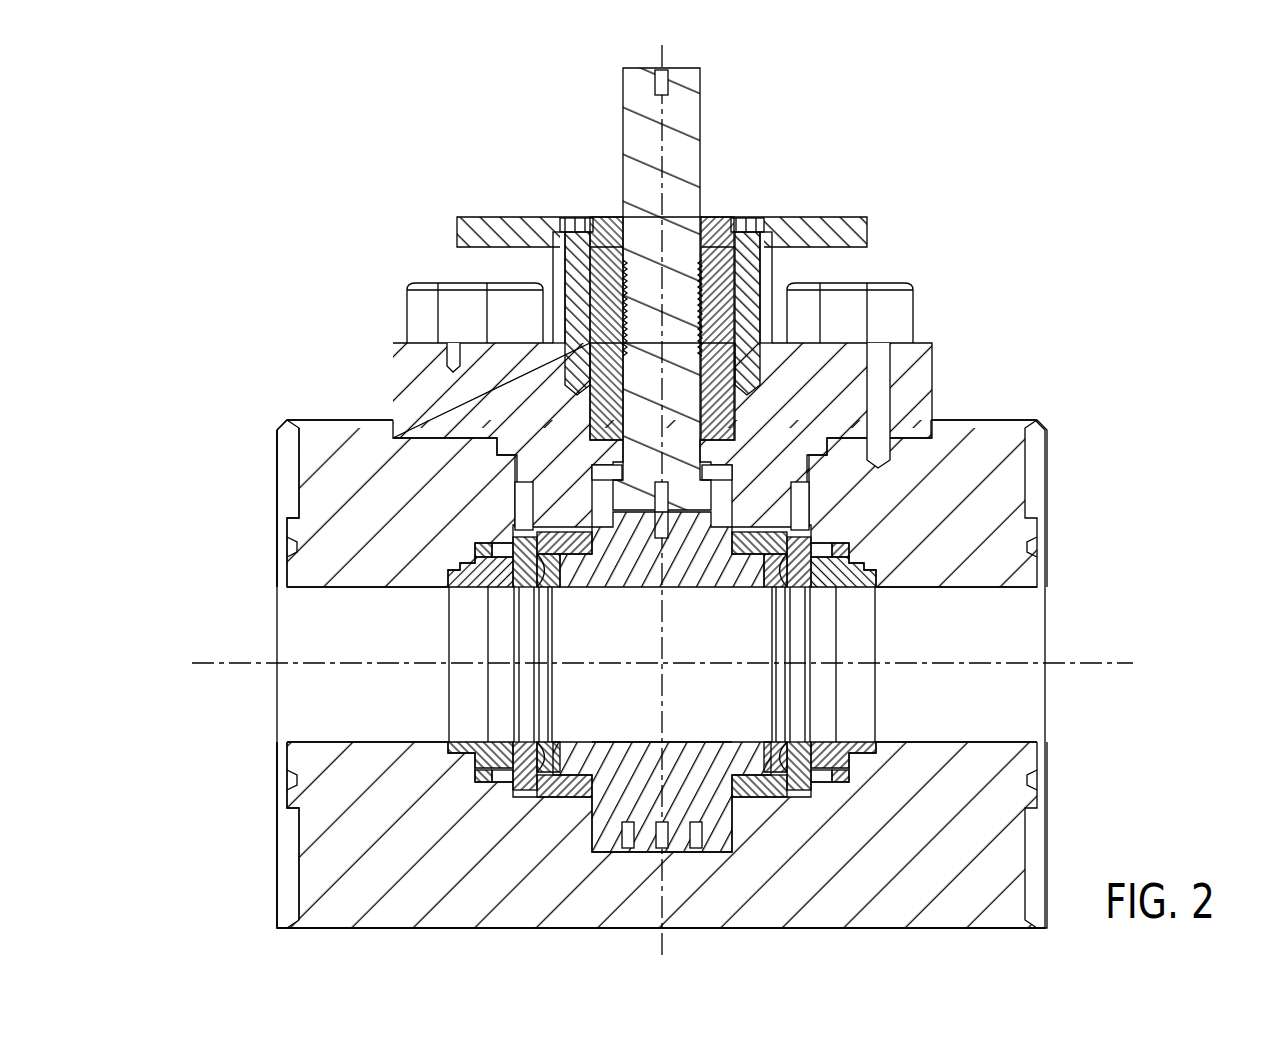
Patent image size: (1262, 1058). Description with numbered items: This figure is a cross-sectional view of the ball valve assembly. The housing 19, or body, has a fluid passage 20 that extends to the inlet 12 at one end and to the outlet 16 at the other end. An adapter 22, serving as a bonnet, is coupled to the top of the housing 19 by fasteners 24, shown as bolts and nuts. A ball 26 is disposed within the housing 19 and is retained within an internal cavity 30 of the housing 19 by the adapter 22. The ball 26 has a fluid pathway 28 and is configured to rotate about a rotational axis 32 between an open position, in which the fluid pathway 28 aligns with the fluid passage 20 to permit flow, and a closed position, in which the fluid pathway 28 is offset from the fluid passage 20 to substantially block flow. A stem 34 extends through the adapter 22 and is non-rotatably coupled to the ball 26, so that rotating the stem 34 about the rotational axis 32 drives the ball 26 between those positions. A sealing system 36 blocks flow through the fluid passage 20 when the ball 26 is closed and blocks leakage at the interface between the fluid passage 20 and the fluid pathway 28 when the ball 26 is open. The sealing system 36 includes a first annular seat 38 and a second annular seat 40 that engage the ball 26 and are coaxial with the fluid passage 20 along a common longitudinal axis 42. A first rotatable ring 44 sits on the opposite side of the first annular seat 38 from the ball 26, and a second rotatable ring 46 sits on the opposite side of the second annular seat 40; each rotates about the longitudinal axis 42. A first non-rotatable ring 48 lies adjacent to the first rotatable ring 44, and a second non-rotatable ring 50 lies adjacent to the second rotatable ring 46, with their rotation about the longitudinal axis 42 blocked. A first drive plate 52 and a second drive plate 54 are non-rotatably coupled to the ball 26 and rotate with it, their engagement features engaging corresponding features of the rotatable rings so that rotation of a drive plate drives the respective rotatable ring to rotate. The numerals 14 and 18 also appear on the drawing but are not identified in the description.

The inlet 12 is at (1045, 598).
The ball valve 14 is at (1064, 600).
The outlet 16 is at (287, 588).
The flow inlet direction 18 is at (214, 634).
The housing 19 is at (998, 491).
The fluid passage 20 is at (1005, 736).
The adapter 22 is at (912, 384).
The fasteners 24 is at (417, 300).
The ball 26 is at (628, 760).
The fluid pathway 28 is at (690, 742).
The internal cavity 30 is at (547, 773).
The rotational axis 32 is at (660, 55).
The stem 34 is at (677, 137).
The sealing system 36 is at (430, 706).
The first annular seat 38 is at (773, 577).
The second annular seat 40 is at (548, 578).
The longitudinal axis 42 is at (1107, 663).
The first rotatable ring 44 is at (815, 582).
The second rotatable ring 46 is at (497, 588).
The first non-rotatable ring 48 is at (860, 580).
The second non-rotatable ring 50 is at (466, 578).
The first drive plate 52 is at (545, 548).
The second drive plate 54 is at (560, 778).